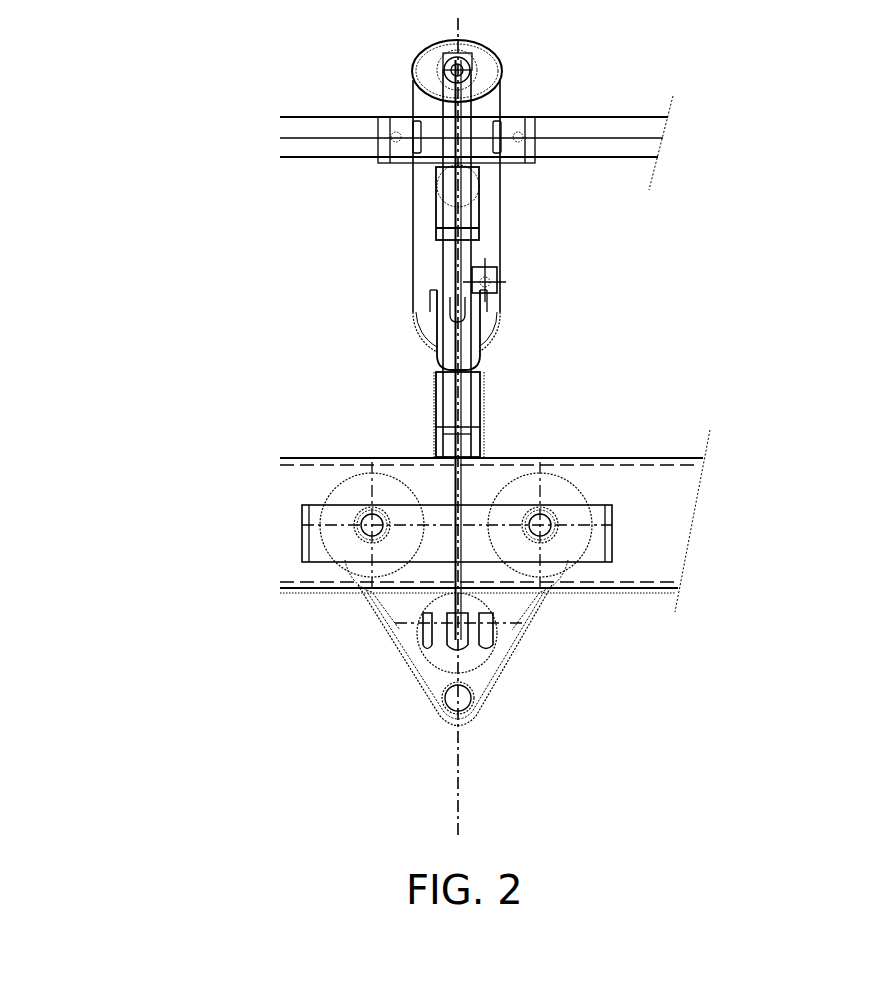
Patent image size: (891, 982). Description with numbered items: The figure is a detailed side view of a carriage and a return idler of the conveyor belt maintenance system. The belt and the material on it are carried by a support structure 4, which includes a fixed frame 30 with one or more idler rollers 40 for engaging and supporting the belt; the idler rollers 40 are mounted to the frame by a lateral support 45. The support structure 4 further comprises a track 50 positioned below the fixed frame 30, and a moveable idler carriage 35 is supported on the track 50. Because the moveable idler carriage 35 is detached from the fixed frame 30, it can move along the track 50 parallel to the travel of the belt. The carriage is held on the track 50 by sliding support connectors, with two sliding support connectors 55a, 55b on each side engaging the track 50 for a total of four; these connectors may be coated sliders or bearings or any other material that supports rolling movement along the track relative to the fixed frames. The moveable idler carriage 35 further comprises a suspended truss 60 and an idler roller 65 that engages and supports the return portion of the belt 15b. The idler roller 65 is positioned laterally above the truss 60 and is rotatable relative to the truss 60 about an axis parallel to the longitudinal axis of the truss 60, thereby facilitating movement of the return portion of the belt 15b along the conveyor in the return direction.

The support structure 4 is at (735, 172).
The fixed frame 30 is at (432, 228).
The idler roller 40 is at (428, 253).
The lateral support 45 is at (440, 330).
The track 50 is at (636, 512).
The moveable idler carriage 35 is at (265, 616).
The sliding support connector 55a is at (372, 540).
The sliding support connector 55b is at (540, 548).
The return portion of the belt 15b is at (420, 688).
The idler roller 65 is at (500, 622).
The suspended truss 60 is at (462, 700).